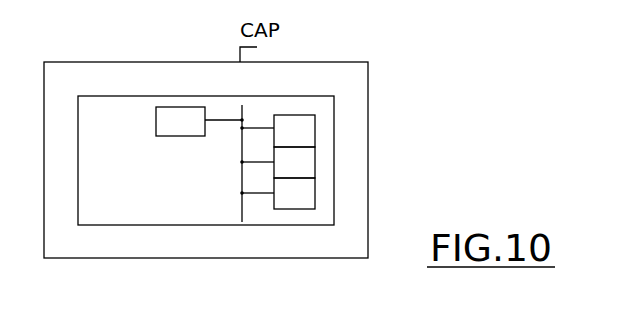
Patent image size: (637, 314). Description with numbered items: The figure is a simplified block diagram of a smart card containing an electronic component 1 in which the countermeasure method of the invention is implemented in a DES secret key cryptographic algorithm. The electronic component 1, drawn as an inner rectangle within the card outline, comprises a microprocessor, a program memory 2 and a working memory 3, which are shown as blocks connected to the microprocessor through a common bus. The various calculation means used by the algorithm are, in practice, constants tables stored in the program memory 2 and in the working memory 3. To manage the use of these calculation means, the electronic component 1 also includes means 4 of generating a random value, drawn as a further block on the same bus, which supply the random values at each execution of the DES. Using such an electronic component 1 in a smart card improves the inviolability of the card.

The electronic component 1 is at (334, 100).
The program memory 2 is at (310, 133).
The working memory 3 is at (330, 162).
The means of generating a random value 4 is at (307, 197).